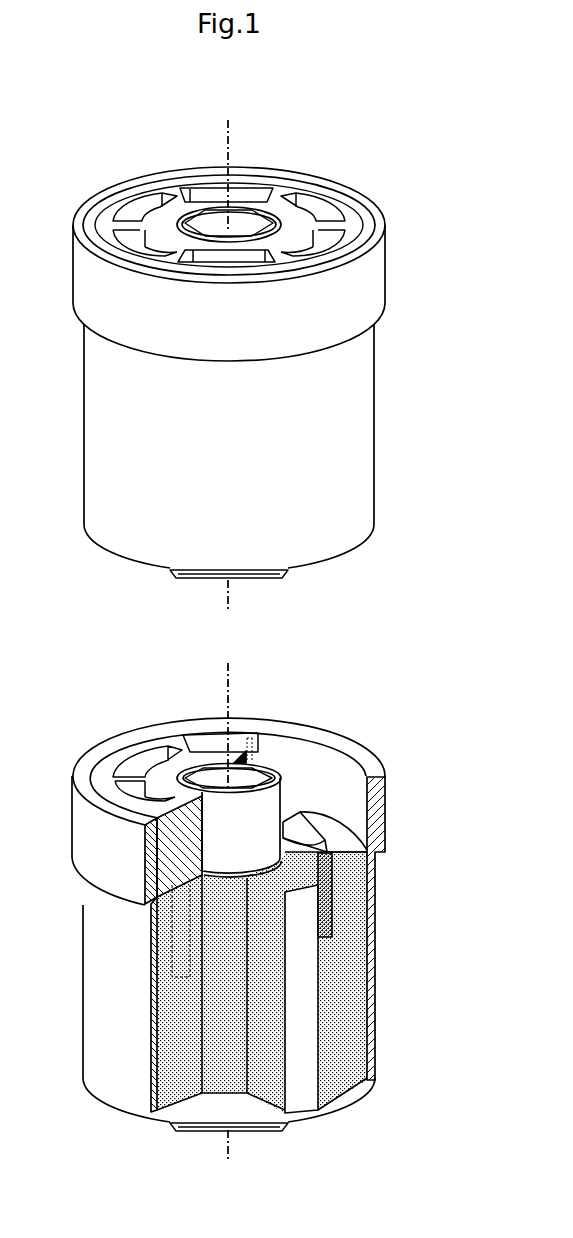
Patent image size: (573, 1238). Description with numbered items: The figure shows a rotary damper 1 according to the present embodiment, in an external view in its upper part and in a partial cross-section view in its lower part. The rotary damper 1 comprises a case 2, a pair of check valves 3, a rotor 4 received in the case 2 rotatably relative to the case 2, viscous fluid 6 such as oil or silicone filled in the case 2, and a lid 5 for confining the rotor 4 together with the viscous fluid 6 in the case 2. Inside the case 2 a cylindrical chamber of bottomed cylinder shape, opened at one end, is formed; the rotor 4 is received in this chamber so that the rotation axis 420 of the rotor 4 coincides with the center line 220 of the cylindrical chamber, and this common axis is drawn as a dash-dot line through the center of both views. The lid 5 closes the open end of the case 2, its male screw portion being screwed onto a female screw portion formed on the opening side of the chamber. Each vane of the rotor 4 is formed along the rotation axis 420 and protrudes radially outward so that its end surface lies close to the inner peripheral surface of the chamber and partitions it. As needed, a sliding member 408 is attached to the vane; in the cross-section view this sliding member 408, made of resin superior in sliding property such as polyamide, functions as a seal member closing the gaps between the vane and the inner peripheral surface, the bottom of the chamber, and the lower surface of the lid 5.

The rotary damper 1 is at (267, 624).
The case 2 is at (375, 388).
The check valves 3 is at (307, 838).
The rotor 4 is at (268, 218).
The lid 5 is at (352, 222).
The viscous fluid 6 is at (340, 1015).
The center line 220 is at (228, 135).
The rotation axis 420 is at (228, 135).
The sliding member 408 is at (285, 887).